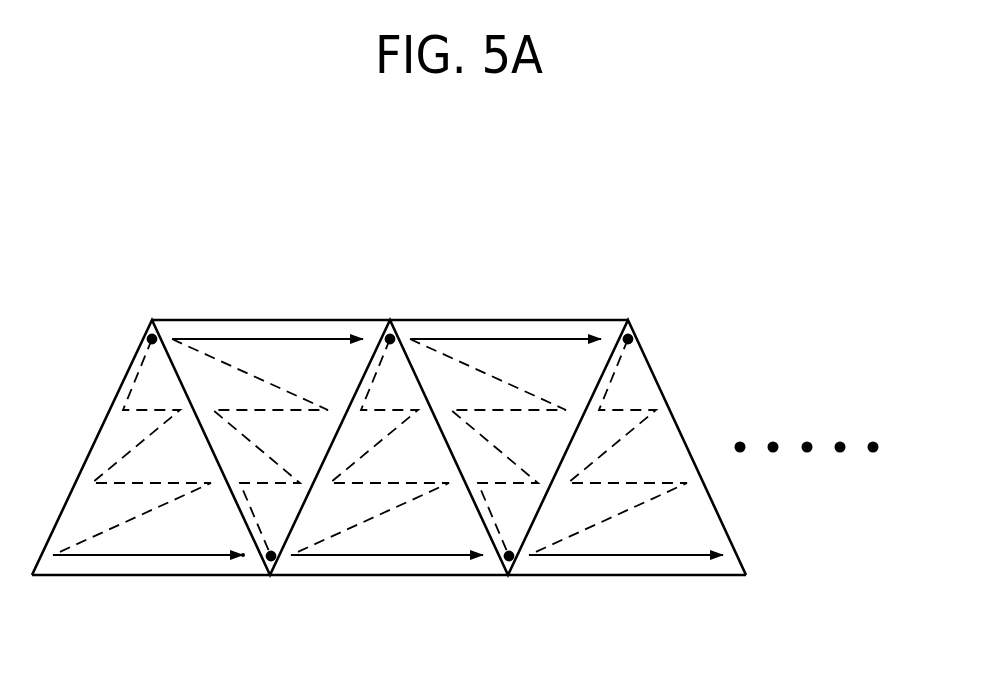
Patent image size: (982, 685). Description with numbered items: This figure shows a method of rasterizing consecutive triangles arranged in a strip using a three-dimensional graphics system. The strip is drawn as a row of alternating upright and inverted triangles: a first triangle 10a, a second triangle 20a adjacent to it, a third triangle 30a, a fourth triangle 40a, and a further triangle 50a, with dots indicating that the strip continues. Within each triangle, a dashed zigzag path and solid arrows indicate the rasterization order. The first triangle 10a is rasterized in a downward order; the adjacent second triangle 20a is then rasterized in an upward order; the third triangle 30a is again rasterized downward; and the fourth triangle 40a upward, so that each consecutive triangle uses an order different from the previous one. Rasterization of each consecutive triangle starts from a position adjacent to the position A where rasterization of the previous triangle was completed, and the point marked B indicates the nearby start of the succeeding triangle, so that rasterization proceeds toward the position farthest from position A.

The first triangle 10a is at (150, 575).
The second triangle 20a is at (305, 319).
The third triangle 30a is at (388, 575).
The fourth triangle 40a is at (542, 319).
The fifth triangular cell 50a is at (628, 575).
The position where rasterization of the previous triangle is finished A is at (246, 558).
The scan start point B is at (272, 561).